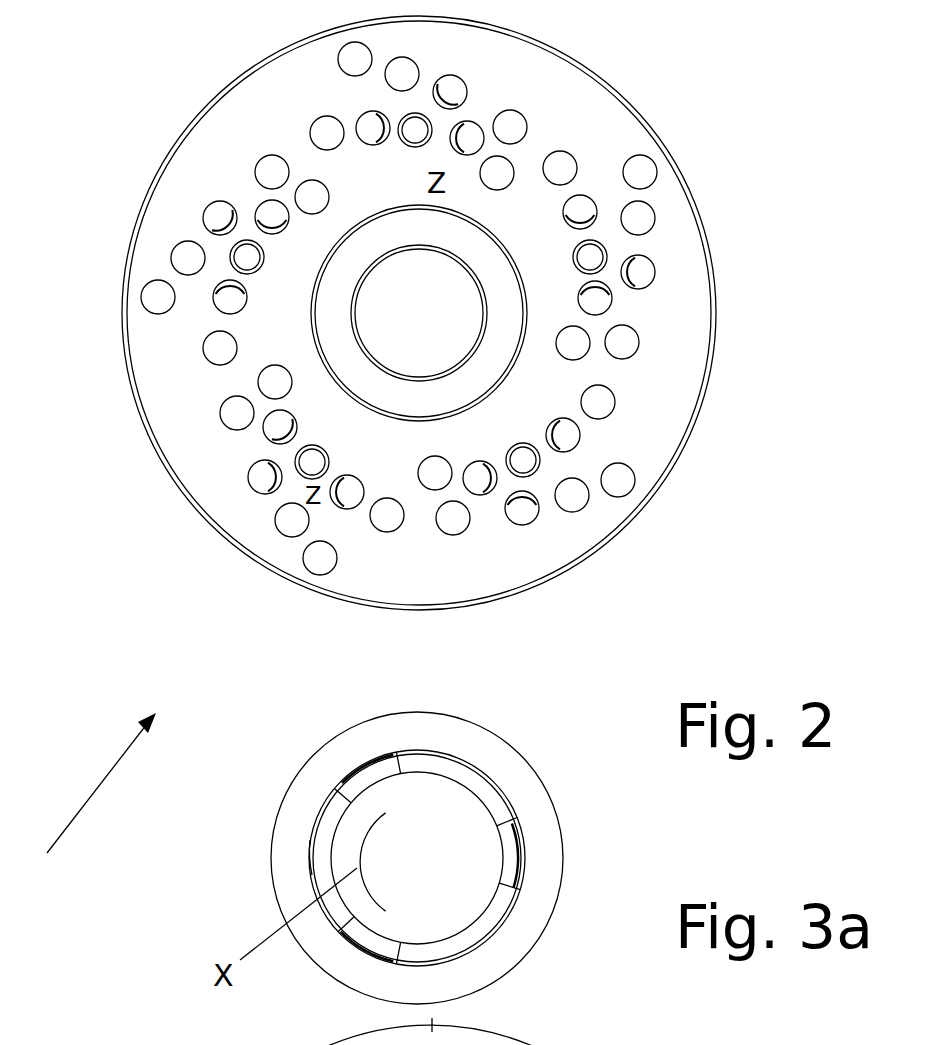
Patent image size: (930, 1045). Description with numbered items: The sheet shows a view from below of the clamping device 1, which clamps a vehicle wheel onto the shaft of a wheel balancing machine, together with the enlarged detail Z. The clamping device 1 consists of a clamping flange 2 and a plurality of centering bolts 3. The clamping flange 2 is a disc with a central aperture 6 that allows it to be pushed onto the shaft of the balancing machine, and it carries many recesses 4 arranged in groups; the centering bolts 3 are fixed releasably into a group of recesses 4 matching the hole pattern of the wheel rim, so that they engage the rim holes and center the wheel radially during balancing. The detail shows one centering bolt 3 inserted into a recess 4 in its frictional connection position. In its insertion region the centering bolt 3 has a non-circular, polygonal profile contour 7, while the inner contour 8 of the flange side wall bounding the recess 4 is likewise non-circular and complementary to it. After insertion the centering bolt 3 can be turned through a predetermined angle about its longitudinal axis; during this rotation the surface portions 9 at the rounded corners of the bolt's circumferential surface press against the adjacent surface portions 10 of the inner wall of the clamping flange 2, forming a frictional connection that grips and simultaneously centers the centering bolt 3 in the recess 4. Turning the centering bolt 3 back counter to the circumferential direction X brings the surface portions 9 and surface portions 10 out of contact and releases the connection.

In FIG. 3a, the clamping device 1 is at (88, 803).
In FIG. 2, the clamping flange 2 is at (198, 463).
In FIG. 3a, the clamping flange 2 is at (288, 870).
In FIG. 2, the centering bolt 3 is at (312, 462).
In FIG. 3a, the centering bolt 3 is at (453, 817).
In FIG. 2, the recess 4 is at (387, 522).
In FIG. 3a, the recess 4 is at (315, 823).
In FIG. 2, the central aperture 6 is at (393, 287).
In FIG. 3a, the profile contour 7 is at (437, 752).
In FIG. 3a, the inner contour 8 is at (313, 853).
In FIG. 3a, the surface portions 9 is at (374, 812).
In FIG. 3a, the surface portions 10 is at (352, 769).